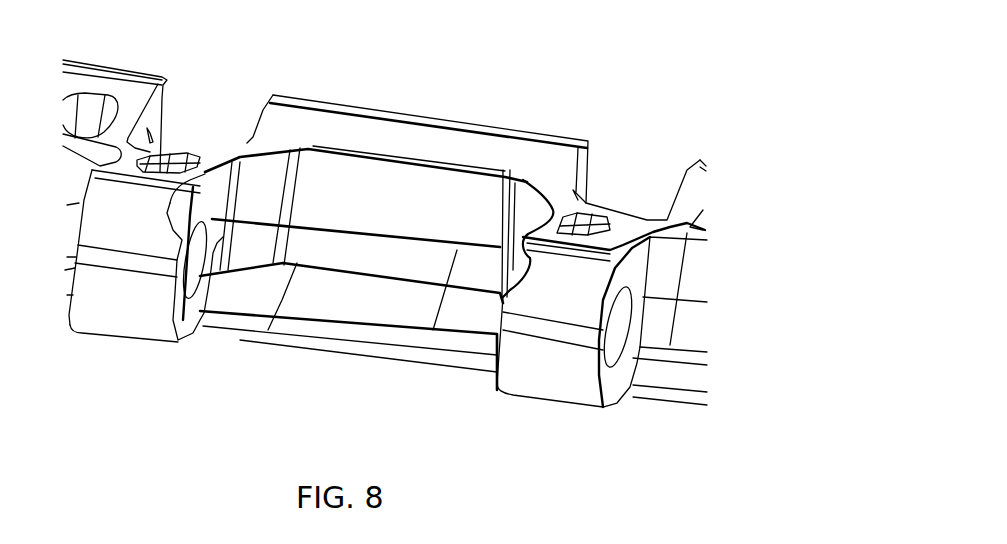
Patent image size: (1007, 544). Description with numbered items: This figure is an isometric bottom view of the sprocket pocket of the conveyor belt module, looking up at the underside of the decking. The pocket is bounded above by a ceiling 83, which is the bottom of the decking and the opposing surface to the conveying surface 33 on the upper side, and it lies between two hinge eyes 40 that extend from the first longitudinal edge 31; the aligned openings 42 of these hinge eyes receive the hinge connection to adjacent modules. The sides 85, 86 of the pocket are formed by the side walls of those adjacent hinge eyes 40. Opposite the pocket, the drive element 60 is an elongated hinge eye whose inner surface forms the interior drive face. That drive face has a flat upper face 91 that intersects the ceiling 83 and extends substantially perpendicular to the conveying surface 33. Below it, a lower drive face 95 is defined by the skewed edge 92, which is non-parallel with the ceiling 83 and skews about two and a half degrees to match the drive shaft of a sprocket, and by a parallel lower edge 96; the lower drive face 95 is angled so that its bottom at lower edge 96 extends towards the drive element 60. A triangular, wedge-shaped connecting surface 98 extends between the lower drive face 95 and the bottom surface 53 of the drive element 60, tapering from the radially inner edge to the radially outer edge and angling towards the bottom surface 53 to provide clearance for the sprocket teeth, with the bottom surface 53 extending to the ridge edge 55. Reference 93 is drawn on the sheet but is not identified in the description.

The first longitudinal edge 31 is at (314, 340).
The conveying surface 33 is at (348, 355).
The hinge eyes 40 is at (128, 323).
The openings 42 is at (615, 357).
The bottom surface 53 is at (413, 150).
The ridge edge 55 is at (522, 140).
The drive element 60 is at (598, 148).
The ceiling 83 is at (357, 302).
The side 85 is at (212, 188).
The side 86 is at (523, 235).
The upper face 91 is at (385, 264).
The skewed edge 92 is at (433, 330).
The edge line 93 is at (268, 330).
The lower drive face 95 is at (395, 212).
The lower edge 96 is at (337, 168).
The connecting surface 98 is at (330, 145).